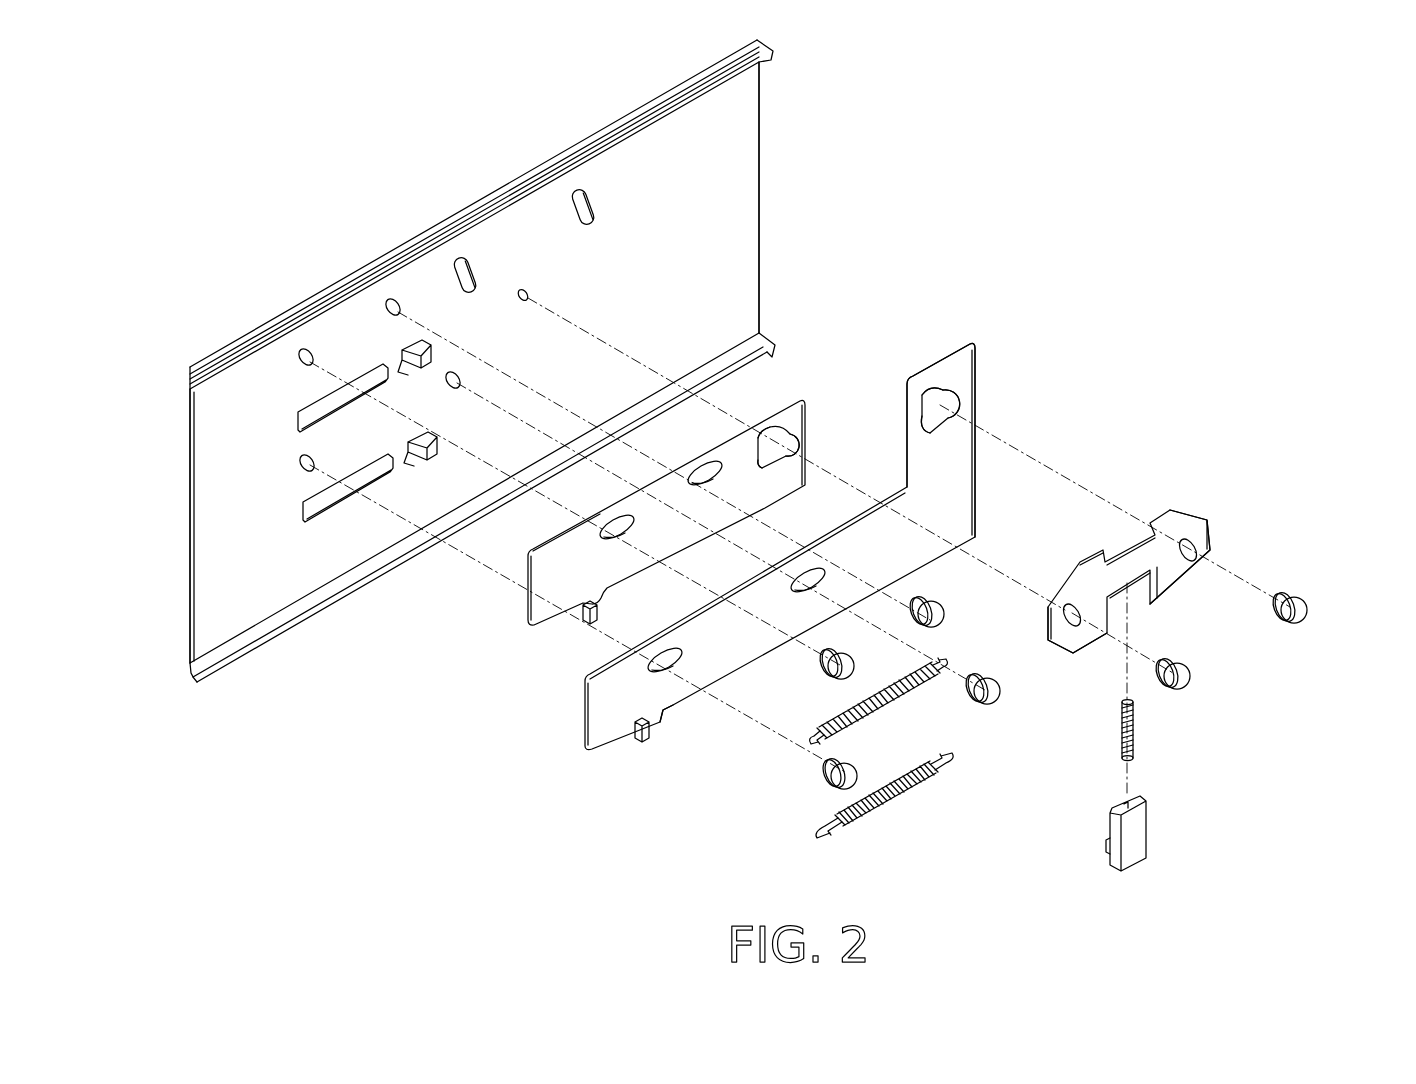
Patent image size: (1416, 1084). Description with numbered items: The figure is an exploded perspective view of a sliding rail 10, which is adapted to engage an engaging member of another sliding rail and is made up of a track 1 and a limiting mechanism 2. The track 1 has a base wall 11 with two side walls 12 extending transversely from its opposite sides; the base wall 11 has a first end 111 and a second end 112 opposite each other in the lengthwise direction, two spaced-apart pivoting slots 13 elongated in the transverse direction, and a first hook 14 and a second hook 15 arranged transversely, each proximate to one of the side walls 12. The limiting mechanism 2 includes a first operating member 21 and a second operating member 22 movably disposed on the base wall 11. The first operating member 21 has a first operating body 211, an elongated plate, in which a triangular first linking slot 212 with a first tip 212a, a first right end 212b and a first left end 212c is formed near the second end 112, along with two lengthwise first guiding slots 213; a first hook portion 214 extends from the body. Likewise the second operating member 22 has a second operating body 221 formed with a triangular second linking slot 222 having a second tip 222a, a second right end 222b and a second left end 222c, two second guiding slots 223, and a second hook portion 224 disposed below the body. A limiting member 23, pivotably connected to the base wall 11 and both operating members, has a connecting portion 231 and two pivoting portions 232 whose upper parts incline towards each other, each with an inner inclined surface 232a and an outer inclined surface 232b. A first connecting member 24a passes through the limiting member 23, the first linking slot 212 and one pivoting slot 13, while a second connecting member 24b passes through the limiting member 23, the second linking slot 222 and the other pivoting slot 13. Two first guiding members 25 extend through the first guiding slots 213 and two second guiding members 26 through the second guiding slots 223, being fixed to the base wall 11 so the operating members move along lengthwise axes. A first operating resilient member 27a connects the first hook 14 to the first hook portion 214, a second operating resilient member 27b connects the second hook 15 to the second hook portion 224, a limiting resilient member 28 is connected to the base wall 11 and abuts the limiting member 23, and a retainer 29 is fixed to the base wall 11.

The track 1 is at (185, 362).
The sliding rail 10 is at (990, 280).
The base wall 11 is at (275, 588).
The first end 111 is at (190, 487).
The second end 112 is at (762, 186).
The side walls 12 is at (345, 300).
The pivoting slots 13 is at (578, 210).
The first hook 14 is at (410, 355).
The second hook 15 is at (428, 465).
The limiting mechanism 2 is at (714, 813).
The first operating member 21 is at (517, 603).
The first operating body 211 is at (555, 572).
The first linking slot 212 is at (787, 436).
The first tip 212a is at (772, 432).
The first right end 212b is at (790, 445).
The first left end 212c is at (770, 468).
The first guiding slots 213 is at (622, 522).
The first hook portion 214 is at (583, 613).
The second operating member 22 is at (592, 745).
The second operating body 221 is at (672, 695).
The second linking slot 222 is at (948, 395).
The second tip 222a is at (936, 385).
The second right end 222b is at (950, 410).
The second left end 222c is at (925, 428).
The second guiding slots 223 is at (803, 578).
The second hook portion 224 is at (642, 742).
The limiting member 23 is at (1198, 510).
The connecting portion 231 is at (1140, 572).
The pivoting portions 232 is at (1200, 565).
The inner inclined surface 232a is at (1147, 528).
The outer inclined surface 232b is at (1197, 512).
The first connecting member 24a is at (1190, 676).
The second connecting member 24b is at (1307, 611).
The first guiding members 25 is at (938, 614).
The second guiding members 26 is at (990, 694).
The first operating resilient member 27a is at (908, 698).
The second operating resilient member 27b is at (905, 800).
The limiting resilient member 28 is at (1135, 740).
The retainer 29 is at (1132, 832).